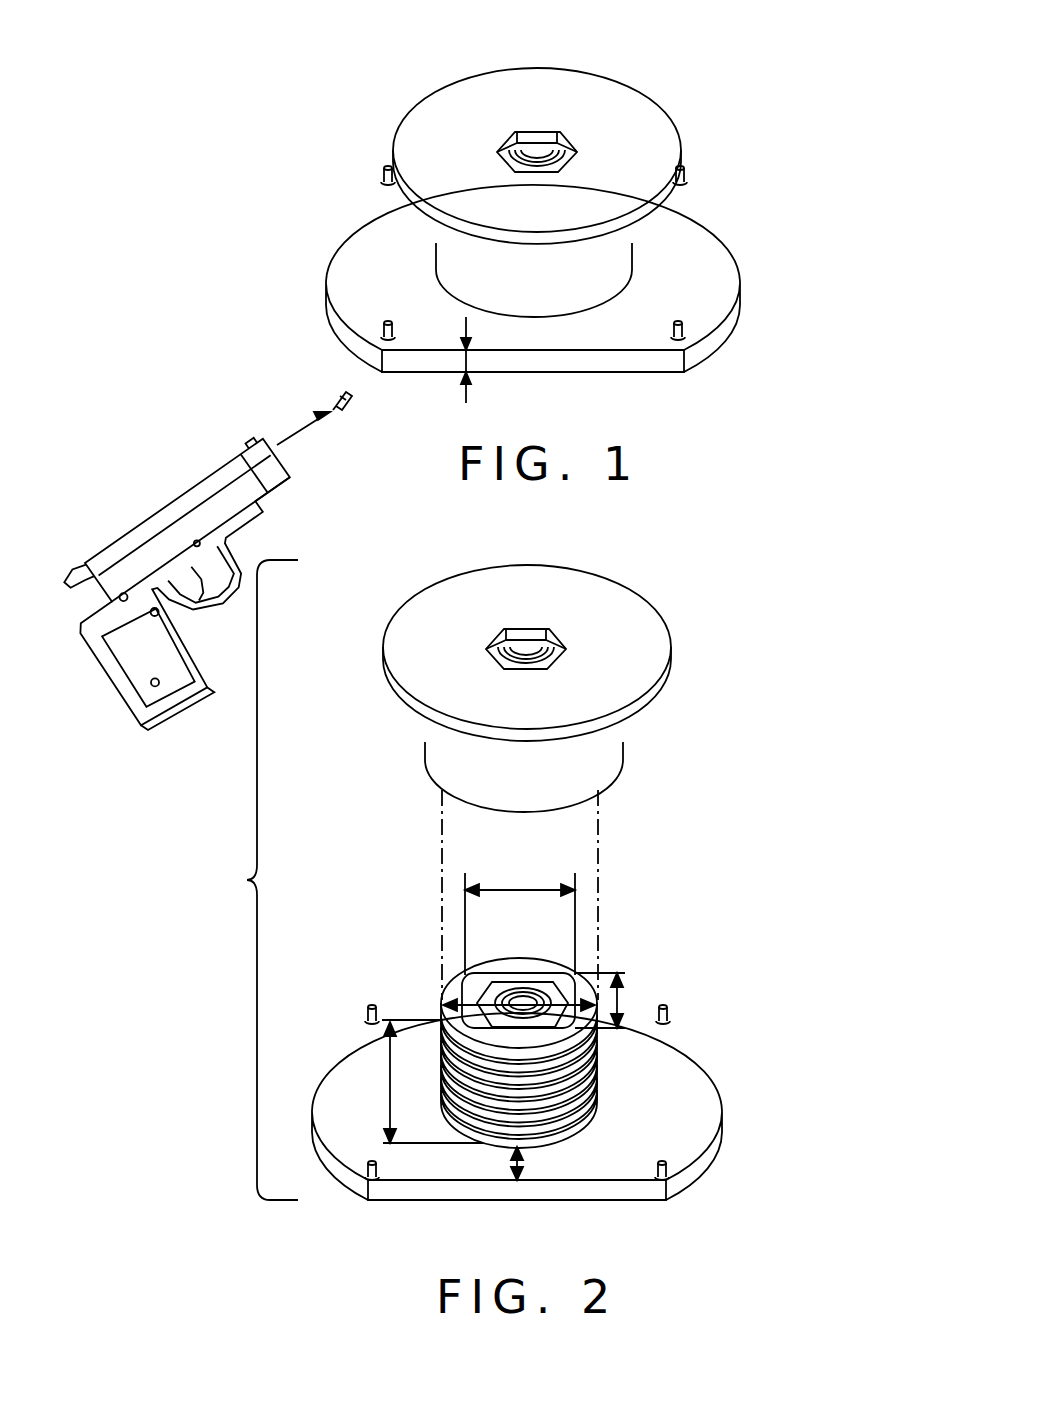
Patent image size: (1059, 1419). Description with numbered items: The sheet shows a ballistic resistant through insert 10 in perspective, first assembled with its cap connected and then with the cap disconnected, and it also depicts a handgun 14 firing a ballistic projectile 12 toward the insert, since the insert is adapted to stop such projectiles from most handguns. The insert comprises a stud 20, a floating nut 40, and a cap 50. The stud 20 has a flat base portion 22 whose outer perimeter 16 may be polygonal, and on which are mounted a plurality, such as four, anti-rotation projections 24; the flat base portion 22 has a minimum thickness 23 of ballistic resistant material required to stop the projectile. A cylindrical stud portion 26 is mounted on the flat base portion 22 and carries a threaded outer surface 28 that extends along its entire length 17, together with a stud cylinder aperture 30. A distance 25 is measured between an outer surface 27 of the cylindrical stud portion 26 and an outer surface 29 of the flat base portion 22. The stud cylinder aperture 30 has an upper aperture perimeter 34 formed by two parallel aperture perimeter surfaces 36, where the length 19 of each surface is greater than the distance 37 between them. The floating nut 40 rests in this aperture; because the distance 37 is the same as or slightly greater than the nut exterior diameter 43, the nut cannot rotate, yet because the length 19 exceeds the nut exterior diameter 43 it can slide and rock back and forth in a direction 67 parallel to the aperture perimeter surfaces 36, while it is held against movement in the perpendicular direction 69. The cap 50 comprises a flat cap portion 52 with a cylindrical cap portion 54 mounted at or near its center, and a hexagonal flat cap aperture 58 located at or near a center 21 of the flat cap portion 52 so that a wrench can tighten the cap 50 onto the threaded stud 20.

In FIG. 1, the ballistic resistant through insert 10 is at (370, 62).
In FIG. 2, the ballistic resistant through insert 10 is at (247, 880).
In FIG. 1, the ballistic projectile 12 is at (350, 403).
In FIG. 1, the handgun 14 is at (175, 507).
In FIG. 1, the outer perimeter 16 is at (330, 268).
In FIG. 2, the entire length 17 is at (386, 1082).
In FIG. 2, the length 19 is at (510, 890).
In FIG. 1, the stud 20 is at (778, 279).
In FIG. 2, the stud 20 is at (745, 1026).
In FIG. 2, the center 21 is at (557, 637).
In FIG. 1, the flat base portion 22 is at (353, 242).
In FIG. 2, the flat base portion 22 is at (707, 1097).
In FIG. 1, the minimum thickness 23 is at (468, 352).
In FIG. 1, the anti-rotation projections 24 is at (387, 177).
In FIG. 2, the anti-rotation projections 24 is at (663, 1005).
In FIG. 2, the distance 25 is at (527, 1162).
In FIG. 2, the cylindrical stud portion 26 is at (530, 1050).
In FIG. 2, the outer surface 27 is at (560, 1010).
In FIG. 2, the threaded outer surface 28 is at (603, 1068).
In FIG. 2, the outer surface 29 is at (495, 1170).
In FIG. 2, the stud cylinder aperture 30 is at (478, 978).
In FIG. 2, the upper aperture perimeter 34 is at (460, 993).
In FIG. 2, the aperture perimeter surfaces 36 is at (530, 973).
In FIG. 2, the distance 37 is at (627, 993).
In FIG. 1, the floating nut 40 is at (536, 148).
In FIG. 2, the floating nut 40 is at (550, 995).
In FIG. 2, the nut exterior diameter 43 is at (460, 997).
In FIG. 1, the cap 50 is at (665, 98).
In FIG. 2, the cap 50 is at (678, 565).
In FIG. 1, the flat cap portion 52 is at (548, 92).
In FIG. 2, the flat cap portion 52 is at (643, 637).
In FIG. 1, the cylindrical cap portion 54 is at (447, 255).
In FIG. 2, the cylindrical cap portion 54 is at (435, 767).
In FIG. 2, the flat cap aperture 58 is at (527, 635).
In FIG. 2, the direction 67 is at (510, 1003).
In FIG. 2, the perpendicular direction 69 is at (550, 1010).